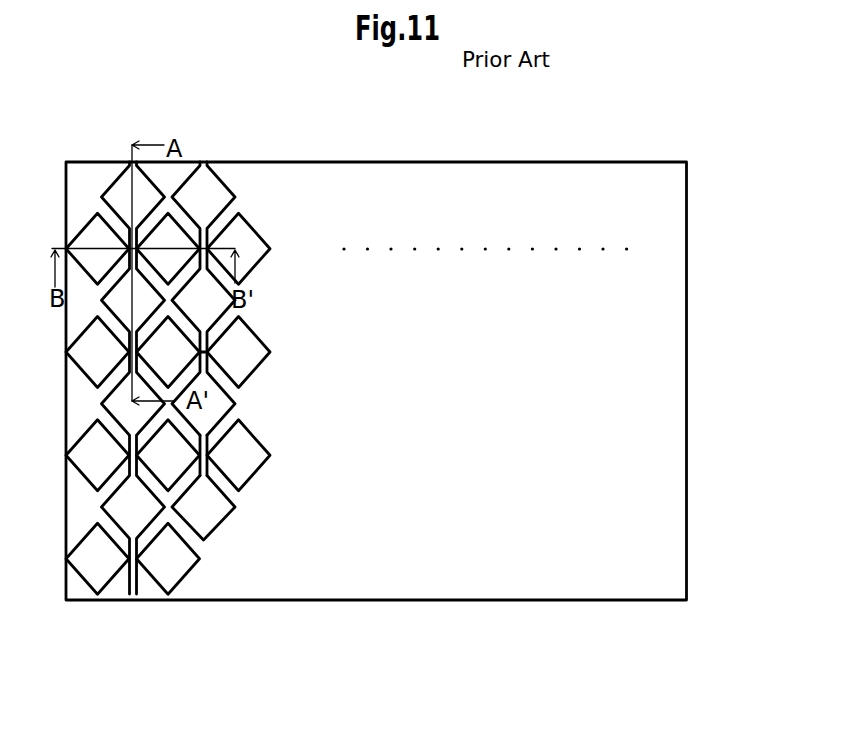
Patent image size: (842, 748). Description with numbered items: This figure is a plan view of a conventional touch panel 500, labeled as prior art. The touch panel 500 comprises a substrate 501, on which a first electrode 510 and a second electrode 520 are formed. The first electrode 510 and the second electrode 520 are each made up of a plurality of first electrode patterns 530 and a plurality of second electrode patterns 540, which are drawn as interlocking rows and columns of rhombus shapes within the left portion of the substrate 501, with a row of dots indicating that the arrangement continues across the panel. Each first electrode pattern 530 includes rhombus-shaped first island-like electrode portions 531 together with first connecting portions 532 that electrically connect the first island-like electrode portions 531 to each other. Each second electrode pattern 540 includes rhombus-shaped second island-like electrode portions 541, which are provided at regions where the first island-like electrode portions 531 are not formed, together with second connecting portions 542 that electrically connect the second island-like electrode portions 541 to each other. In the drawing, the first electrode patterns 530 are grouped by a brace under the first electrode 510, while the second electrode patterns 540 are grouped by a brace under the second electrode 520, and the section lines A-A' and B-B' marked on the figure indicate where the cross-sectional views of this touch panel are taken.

The touch panel 500 is at (421, 138).
The substrate 501 is at (627, 328).
The first electrode 510 is at (423, 258).
The second electrode 520 is at (263, 677).
The first electrode pattern 530 is at (280, 269).
The first island-like electrode portion 531 is at (243, 348).
The first connecting portion 532 is at (208, 350).
The second electrode pattern 540 is at (120, 538).
The second island-like electrode portion 541 is at (204, 507).
The second connecting portion 542 is at (207, 467).